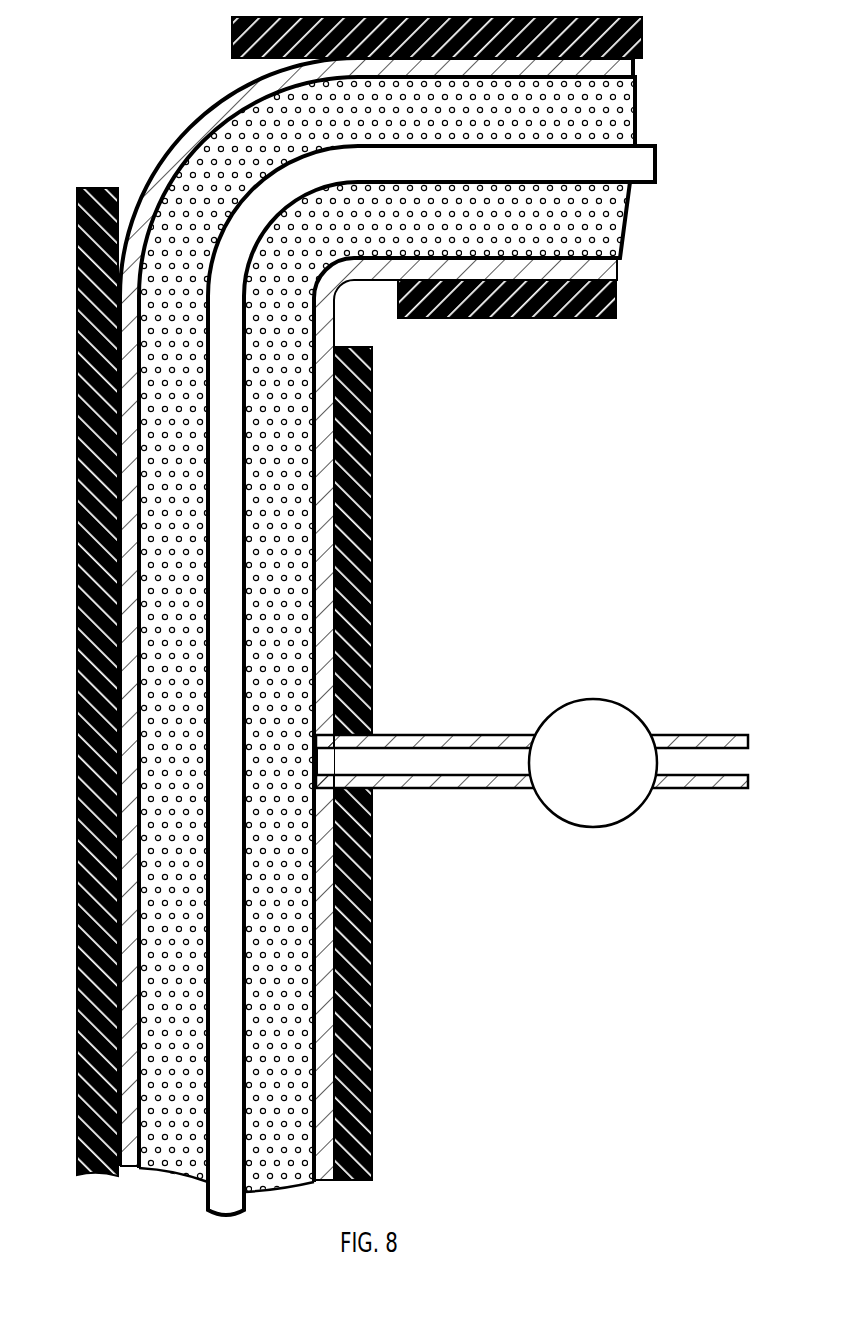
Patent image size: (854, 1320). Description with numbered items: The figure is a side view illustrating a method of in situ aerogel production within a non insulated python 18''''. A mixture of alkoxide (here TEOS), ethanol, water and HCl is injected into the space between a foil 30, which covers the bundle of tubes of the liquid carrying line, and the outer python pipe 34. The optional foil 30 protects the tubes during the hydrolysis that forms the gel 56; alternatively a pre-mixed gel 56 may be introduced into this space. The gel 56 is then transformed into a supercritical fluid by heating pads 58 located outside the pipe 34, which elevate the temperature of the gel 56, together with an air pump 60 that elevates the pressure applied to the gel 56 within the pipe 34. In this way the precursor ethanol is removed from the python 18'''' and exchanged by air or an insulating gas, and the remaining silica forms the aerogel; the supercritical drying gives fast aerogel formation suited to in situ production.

The non insulated python 18'''' is at (392, 612).
The foil 30 is at (650, 165).
The outer python pipe 34 is at (600, 268).
The gel 56 is at (624, 120).
The heating pads 58 is at (596, 302).
The air pump 60 is at (615, 730).